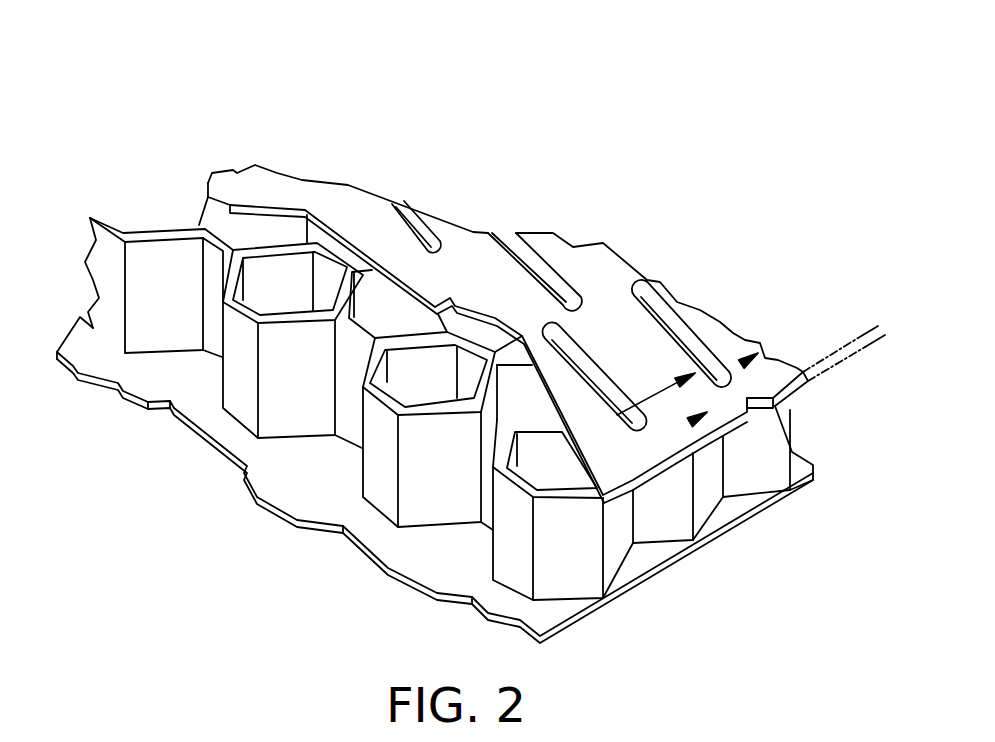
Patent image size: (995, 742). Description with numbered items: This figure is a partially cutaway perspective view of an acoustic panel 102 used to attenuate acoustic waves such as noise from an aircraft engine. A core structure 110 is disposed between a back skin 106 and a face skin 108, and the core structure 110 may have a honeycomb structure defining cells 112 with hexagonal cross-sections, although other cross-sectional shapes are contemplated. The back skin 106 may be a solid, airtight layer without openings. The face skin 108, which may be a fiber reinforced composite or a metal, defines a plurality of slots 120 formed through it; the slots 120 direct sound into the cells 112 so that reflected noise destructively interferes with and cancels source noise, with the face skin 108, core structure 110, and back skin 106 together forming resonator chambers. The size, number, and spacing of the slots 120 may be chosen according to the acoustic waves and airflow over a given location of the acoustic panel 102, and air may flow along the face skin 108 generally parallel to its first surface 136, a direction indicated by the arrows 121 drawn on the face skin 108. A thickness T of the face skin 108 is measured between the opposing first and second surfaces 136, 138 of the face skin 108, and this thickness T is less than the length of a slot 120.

The acoustic panel 102 is at (130, 108).
The back skin 106 is at (415, 552).
The face skin 108 is at (575, 253).
The core structure 110 is at (147, 260).
The cells 112 is at (253, 228).
The slots 120 is at (517, 224).
The flow direction arrows 121 is at (741, 364).
The first surface 136 is at (657, 360).
The second surface 138 is at (776, 408).
The thickness T is at (900, 378).